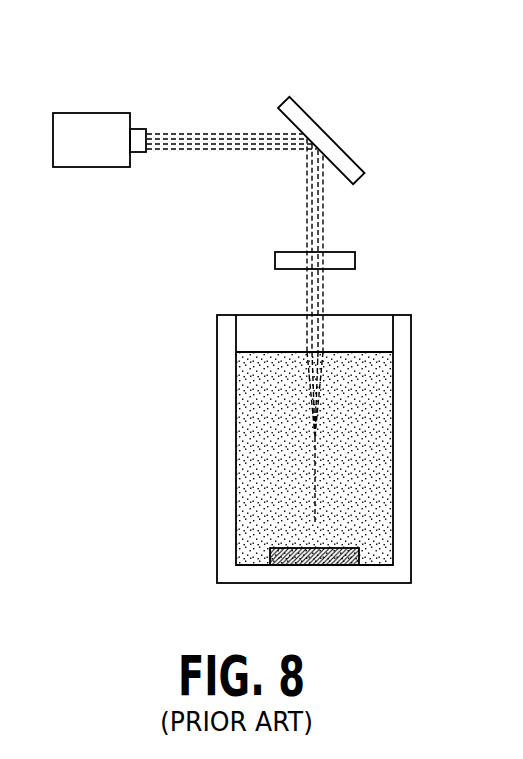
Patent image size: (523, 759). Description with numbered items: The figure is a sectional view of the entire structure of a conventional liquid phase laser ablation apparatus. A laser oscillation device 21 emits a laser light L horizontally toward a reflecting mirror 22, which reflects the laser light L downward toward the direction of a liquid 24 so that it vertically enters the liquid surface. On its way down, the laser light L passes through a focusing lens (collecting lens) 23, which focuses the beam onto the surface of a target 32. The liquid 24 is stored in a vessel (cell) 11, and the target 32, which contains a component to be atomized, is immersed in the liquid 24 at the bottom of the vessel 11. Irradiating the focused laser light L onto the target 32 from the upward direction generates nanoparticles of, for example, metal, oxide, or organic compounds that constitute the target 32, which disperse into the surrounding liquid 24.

The laser oscillation device 21 is at (90, 113).
The laser light L is at (160, 130).
The reflecting mirror 22 is at (354, 162).
The focusing lens (collecting lens) 23 is at (355, 253).
The vessel (cell) 11 is at (217, 450).
The liquid 24 is at (370, 446).
The target 32 is at (316, 566).